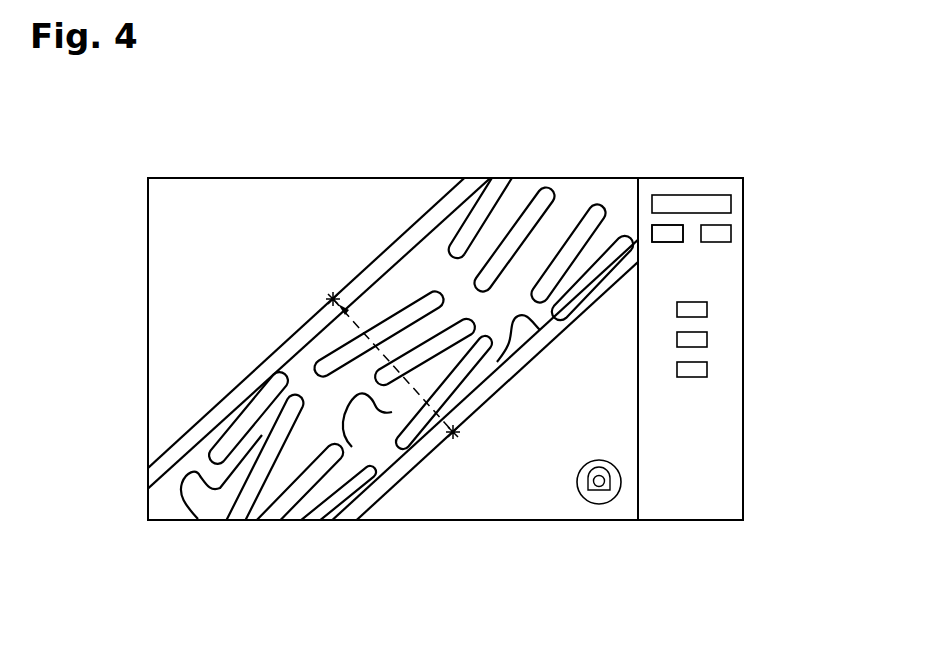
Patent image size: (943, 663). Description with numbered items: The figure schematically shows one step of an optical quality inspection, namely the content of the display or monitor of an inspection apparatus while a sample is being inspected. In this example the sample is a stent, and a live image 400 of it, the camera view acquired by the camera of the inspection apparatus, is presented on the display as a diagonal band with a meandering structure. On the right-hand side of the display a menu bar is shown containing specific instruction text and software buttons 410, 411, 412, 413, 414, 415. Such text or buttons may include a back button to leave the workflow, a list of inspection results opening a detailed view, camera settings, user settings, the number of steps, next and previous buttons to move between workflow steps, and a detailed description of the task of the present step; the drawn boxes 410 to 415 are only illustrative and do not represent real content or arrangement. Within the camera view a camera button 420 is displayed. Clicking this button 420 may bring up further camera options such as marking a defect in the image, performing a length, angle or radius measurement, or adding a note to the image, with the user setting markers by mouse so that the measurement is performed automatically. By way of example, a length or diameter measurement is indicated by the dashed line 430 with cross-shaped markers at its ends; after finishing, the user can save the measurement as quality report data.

The live image 400 is at (366, 254).
The button 410 is at (731, 204).
The button 411 is at (670, 242).
The button 412 is at (731, 233).
The button 413 is at (707, 310).
The button 414 is at (707, 340).
The button 415 is at (707, 370).
The camera button 420 is at (598, 504).
The dashed line 430 is at (365, 333).